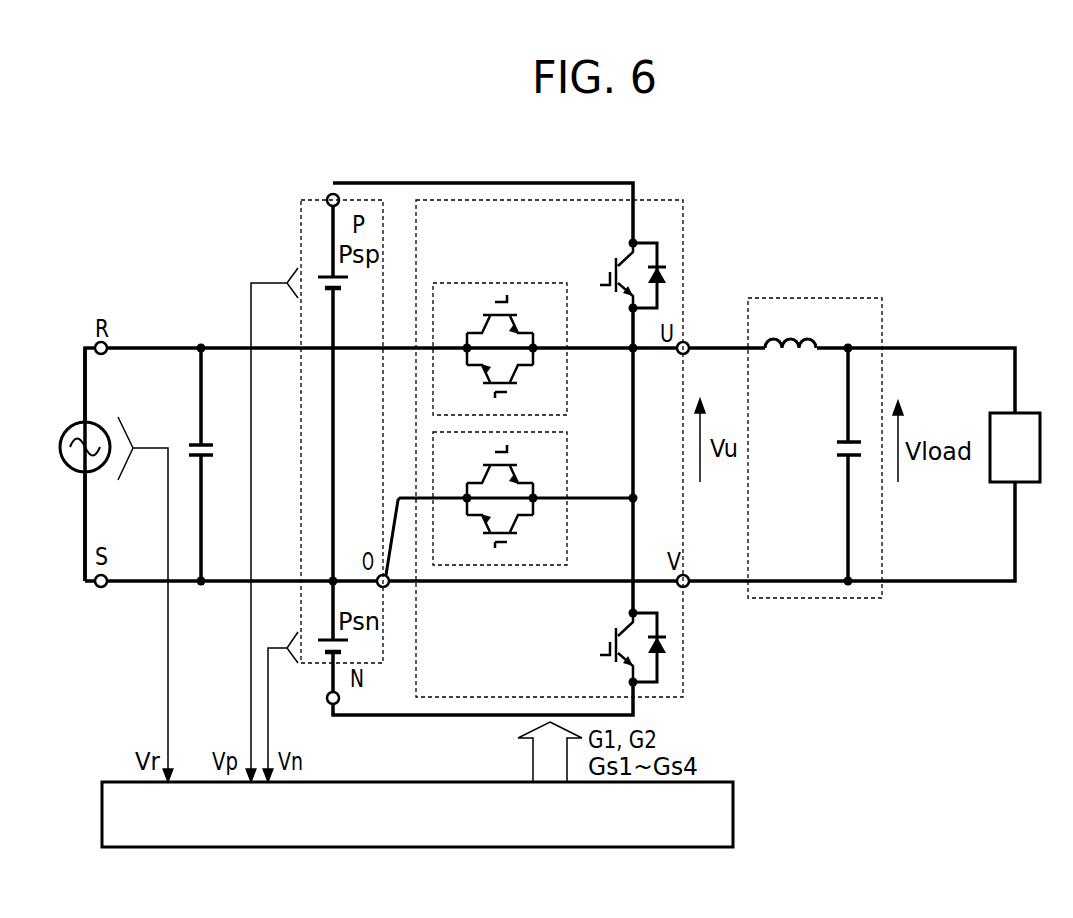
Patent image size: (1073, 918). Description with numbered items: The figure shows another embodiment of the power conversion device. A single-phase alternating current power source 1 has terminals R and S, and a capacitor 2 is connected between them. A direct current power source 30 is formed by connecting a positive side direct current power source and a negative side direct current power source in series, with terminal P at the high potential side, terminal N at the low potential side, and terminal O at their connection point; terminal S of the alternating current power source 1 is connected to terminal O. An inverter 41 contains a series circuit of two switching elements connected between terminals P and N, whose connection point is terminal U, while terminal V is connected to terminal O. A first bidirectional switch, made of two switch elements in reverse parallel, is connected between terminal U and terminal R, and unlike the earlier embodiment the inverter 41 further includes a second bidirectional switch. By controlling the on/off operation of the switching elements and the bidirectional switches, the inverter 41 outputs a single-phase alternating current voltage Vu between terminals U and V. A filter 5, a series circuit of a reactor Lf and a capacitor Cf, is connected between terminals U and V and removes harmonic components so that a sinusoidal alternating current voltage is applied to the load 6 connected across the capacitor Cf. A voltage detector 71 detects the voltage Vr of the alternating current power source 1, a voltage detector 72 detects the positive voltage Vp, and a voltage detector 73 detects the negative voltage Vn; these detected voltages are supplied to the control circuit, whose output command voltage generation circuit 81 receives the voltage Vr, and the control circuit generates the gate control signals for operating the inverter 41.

The single-phase alternating current power source 1 is at (70, 428).
The capacitor 2 is at (196, 438).
The direct current power source 30 is at (301, 243).
The inverter 41 is at (683, 252).
The filter 5 is at (818, 298).
The load 6 is at (1022, 413).
The voltage detector 71 is at (125, 417).
The voltage detector 72 is at (292, 272).
The voltage detector 73 is at (292, 638).
The output command voltage generation circuit 81 is at (107, 781).